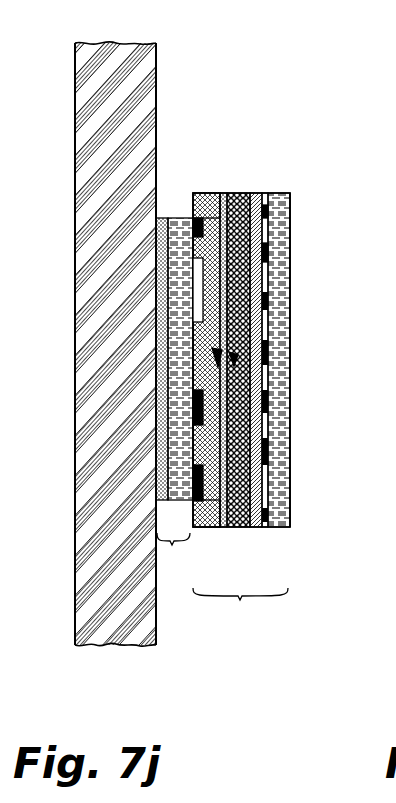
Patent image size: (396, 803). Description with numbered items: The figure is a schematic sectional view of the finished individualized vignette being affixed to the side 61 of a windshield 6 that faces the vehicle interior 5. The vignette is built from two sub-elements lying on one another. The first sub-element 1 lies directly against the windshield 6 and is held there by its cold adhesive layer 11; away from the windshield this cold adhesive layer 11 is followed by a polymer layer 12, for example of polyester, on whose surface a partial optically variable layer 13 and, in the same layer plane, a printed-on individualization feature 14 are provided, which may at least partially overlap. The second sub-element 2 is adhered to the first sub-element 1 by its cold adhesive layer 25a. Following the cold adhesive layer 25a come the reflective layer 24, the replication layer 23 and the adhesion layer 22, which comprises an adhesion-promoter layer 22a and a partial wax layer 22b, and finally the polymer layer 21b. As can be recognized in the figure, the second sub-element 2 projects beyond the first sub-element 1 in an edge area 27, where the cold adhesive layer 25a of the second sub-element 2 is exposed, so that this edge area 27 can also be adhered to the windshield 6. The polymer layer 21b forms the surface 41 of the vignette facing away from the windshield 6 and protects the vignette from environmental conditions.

The first sub-element 1 is at (107, 399).
The second sub-element 2 is at (205, 358).
The vehicle interior 5 is at (330, 344).
The windshield 6 is at (93, 632).
The side of the windshield 61 is at (160, 625).
The cold adhesive layer 11 is at (200, 303).
The polymer layer 12 is at (172, 365).
The partial optically variable layer 13 is at (172, 418).
The individualization feature 14 is at (196, 227).
The polymer layer 21b is at (270, 190).
The adhesion layer 22 is at (258, 530).
The adhesion-promoter layer 22a is at (255, 190).
The partial wax layer 22b is at (265, 190).
The replication layer 23 is at (243, 190).
The reflective layer 24 is at (222, 190).
The cold adhesive layer 25a is at (208, 190).
The edge area 27 is at (188, 205).
The surface of the vignette 41 is at (306, 402).